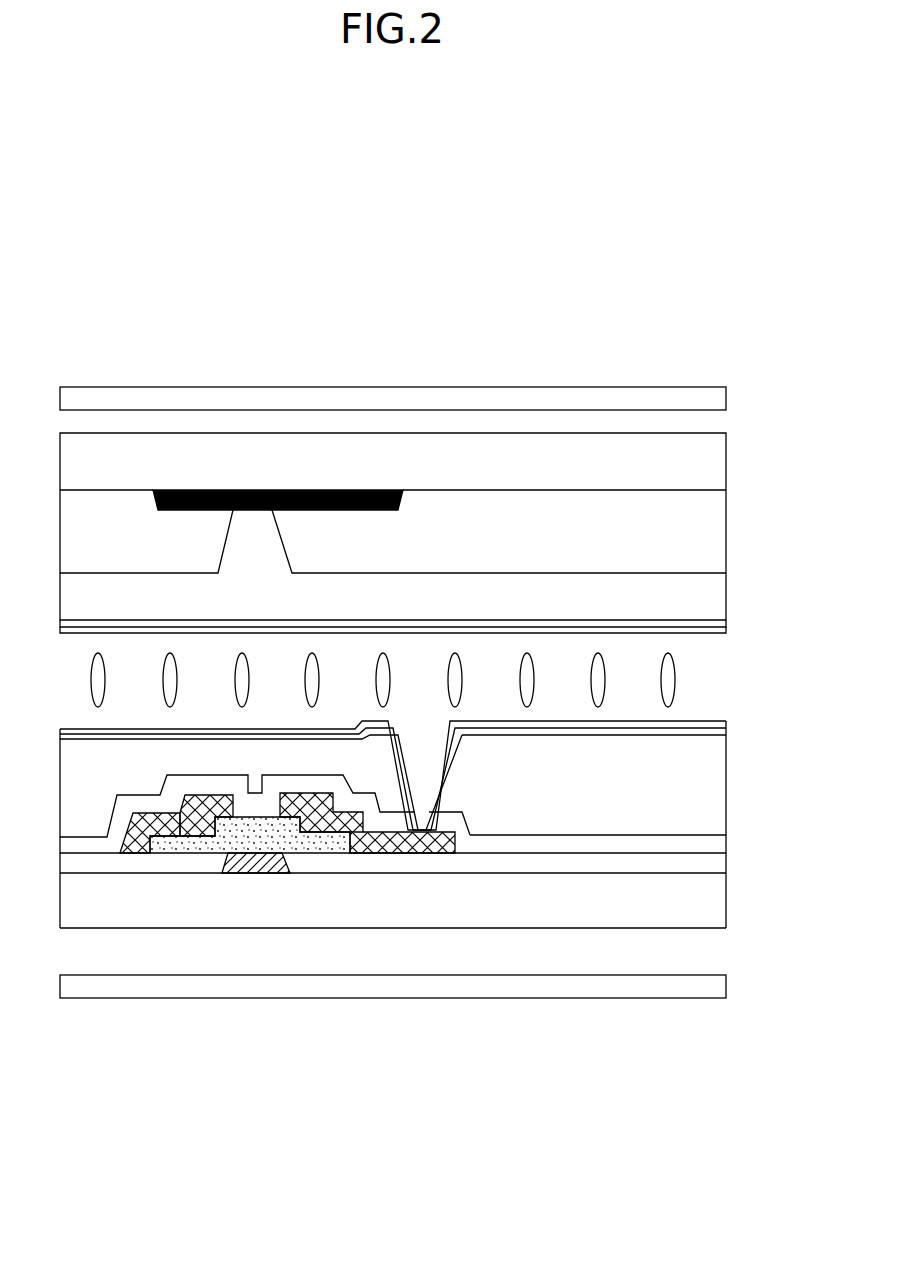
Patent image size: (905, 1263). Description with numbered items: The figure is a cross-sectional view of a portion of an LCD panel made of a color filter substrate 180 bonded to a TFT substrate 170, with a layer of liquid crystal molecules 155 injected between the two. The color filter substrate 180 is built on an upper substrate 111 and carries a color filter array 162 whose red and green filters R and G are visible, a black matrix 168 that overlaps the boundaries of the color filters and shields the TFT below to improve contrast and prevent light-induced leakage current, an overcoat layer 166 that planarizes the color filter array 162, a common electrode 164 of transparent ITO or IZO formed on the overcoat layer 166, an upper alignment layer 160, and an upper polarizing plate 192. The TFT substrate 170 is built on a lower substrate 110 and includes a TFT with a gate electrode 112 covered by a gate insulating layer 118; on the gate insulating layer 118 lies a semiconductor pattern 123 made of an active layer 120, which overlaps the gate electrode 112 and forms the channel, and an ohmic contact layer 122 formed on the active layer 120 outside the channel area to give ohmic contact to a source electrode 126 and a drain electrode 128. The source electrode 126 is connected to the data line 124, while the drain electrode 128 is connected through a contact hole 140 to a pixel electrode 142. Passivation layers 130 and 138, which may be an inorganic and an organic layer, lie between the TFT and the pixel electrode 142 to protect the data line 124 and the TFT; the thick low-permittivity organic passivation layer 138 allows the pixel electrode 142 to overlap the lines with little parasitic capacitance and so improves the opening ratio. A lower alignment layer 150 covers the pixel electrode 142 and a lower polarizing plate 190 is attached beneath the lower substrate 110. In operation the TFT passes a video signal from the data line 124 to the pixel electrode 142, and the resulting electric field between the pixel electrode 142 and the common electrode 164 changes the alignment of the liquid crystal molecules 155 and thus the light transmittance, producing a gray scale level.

The lower substrate 110 is at (470, 922).
The upper substrate 111 is at (722, 455).
The gate electrode 112 is at (260, 866).
The gate insulating layer 118 is at (564, 868).
The active layer 120 is at (191, 842).
The ohmic contact layer 122 is at (168, 838).
The semiconductor pattern 123 is at (247, 955).
The data line 124 is at (147, 845).
The source electrode 126 is at (218, 820).
The drain electrode 128 is at (304, 838).
The passivation layer 130 is at (660, 850).
The organic passivation layer 138 is at (726, 780).
The contact hole 140 is at (401, 845).
The pixel electrode 142 is at (726, 728).
The lower alignment layer 150 is at (726, 721).
The liquid crystal molecules 155 is at (675, 680).
The upper alignment layer 160 is at (726, 630).
The color filter array 162 is at (722, 525).
The common electrode 164 is at (726, 620).
The overcoat layer 166 is at (722, 597).
The black matrix 168 is at (325, 492).
The TFT substrate 170 is at (37, 729).
The color filter substrate 180 is at (37, 390).
The lower polarizing plate 190 is at (722, 985).
The upper polarizing plate 192 is at (722, 397).